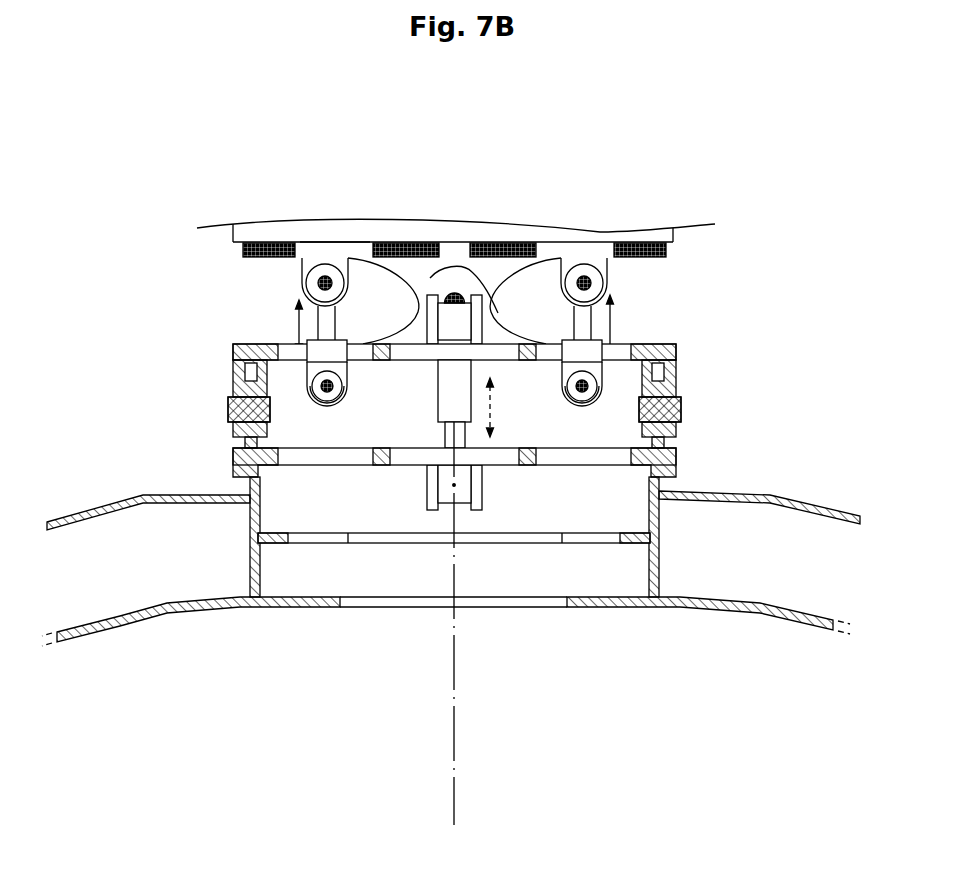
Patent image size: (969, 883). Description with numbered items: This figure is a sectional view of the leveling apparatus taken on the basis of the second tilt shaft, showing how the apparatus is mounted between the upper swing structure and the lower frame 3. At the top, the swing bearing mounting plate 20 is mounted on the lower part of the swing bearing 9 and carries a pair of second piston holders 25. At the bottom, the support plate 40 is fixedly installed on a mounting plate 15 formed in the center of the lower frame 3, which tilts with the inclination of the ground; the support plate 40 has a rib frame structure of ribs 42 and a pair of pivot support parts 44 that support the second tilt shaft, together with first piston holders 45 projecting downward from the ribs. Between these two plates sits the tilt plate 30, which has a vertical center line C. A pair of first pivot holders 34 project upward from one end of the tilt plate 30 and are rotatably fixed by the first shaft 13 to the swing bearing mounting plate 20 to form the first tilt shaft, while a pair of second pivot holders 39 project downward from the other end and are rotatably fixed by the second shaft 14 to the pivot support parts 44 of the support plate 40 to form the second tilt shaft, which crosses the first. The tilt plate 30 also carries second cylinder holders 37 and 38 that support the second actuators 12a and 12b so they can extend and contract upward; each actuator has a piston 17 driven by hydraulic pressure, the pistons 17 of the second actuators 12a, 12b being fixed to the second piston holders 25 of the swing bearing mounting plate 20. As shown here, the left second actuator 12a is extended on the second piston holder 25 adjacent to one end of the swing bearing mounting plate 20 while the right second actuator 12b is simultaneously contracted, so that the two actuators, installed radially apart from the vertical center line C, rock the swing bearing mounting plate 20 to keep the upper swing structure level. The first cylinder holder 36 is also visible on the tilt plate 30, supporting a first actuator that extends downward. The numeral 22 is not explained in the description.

The lower frame 3 is at (802, 506).
The swing bearing 9 is at (318, 227).
The second actuator 12a is at (345, 362).
The second actuator 12b is at (563, 362).
The first shaft 13 is at (452, 292).
The second shaft 14 is at (228, 410).
The mounting plate 15 is at (678, 467).
The piston 17 is at (301, 298).
The swing bearing mounting plate 20 is at (643, 242).
The friction strip 22 is at (403, 243).
The second piston holder 25 is at (301, 288).
The tilt plate 30 is at (675, 342).
The first pivot holder 34 is at (472, 293).
The first cylinder holder 36 is at (547, 262).
The second cylinder holder 37 is at (327, 407).
The second cylinder holder 38 is at (583, 407).
The second pivot holder 39 is at (233, 385).
The support plate 40 is at (233, 453).
The rib 42 is at (383, 466).
The pivot support part 44 is at (233, 363).
The first piston holder 45 is at (482, 490).
The vertical center line C is at (454, 722).